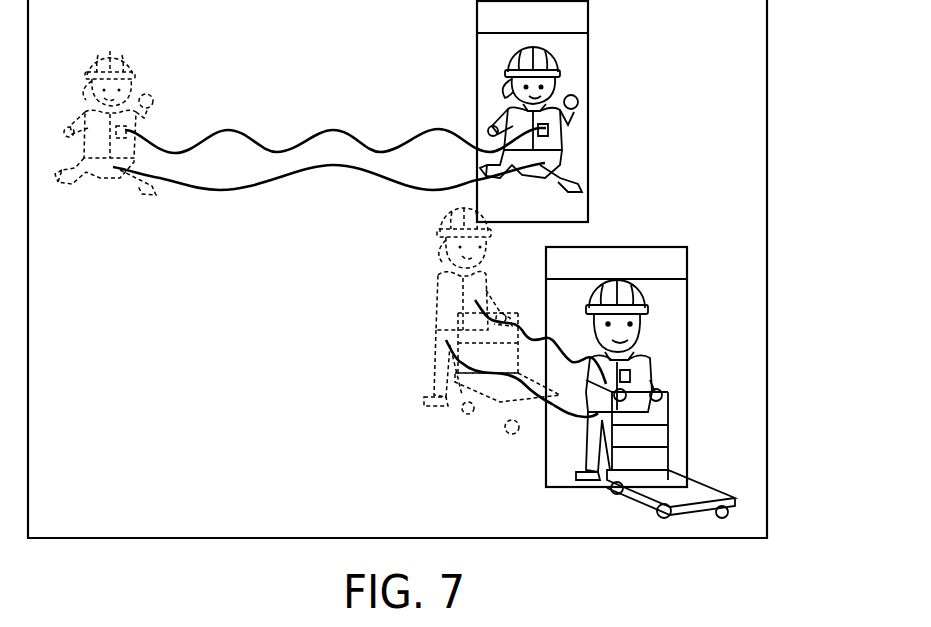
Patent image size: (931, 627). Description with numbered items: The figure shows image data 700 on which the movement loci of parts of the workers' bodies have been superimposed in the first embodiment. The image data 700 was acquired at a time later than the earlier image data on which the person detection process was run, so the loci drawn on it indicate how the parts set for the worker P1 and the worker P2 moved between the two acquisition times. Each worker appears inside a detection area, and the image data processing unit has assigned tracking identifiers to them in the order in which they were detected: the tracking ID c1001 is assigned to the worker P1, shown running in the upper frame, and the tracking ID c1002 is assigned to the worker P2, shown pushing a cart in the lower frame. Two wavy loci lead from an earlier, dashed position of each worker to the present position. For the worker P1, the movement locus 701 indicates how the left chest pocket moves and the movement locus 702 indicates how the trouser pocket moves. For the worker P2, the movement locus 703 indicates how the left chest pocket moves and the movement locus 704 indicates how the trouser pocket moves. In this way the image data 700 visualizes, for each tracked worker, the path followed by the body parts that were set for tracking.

The image data 700 is at (767, 21).
The movement locus 701 is at (330, 127).
The movement locus 702 is at (231, 192).
The movement locus 703 is at (530, 335).
The movement locus 704 is at (508, 375).
The worker P1 is at (562, 65).
The worker P2 is at (645, 301).
The tracking ID c1001 is at (532, 111).
The tracking ID c1002 is at (616, 367).